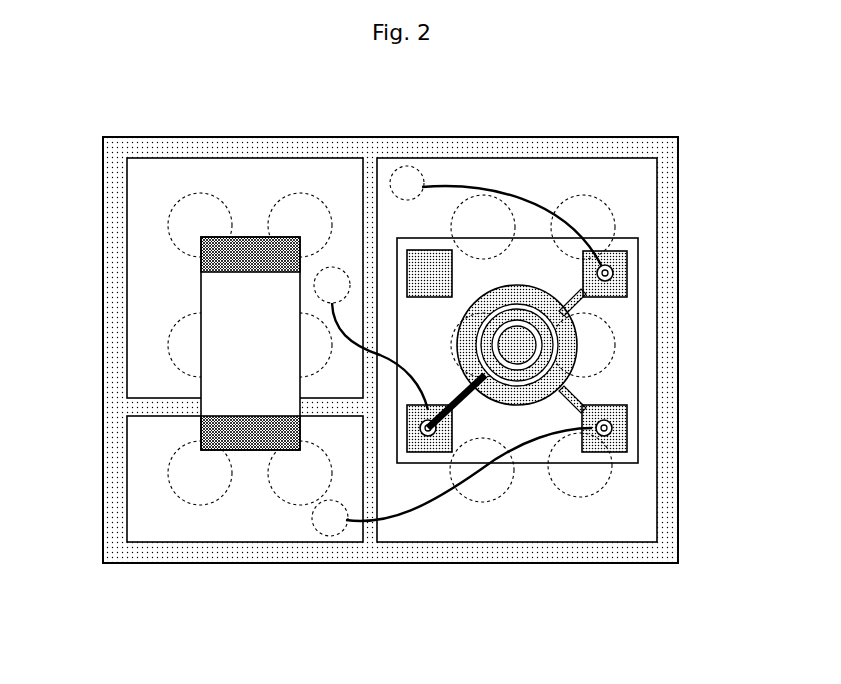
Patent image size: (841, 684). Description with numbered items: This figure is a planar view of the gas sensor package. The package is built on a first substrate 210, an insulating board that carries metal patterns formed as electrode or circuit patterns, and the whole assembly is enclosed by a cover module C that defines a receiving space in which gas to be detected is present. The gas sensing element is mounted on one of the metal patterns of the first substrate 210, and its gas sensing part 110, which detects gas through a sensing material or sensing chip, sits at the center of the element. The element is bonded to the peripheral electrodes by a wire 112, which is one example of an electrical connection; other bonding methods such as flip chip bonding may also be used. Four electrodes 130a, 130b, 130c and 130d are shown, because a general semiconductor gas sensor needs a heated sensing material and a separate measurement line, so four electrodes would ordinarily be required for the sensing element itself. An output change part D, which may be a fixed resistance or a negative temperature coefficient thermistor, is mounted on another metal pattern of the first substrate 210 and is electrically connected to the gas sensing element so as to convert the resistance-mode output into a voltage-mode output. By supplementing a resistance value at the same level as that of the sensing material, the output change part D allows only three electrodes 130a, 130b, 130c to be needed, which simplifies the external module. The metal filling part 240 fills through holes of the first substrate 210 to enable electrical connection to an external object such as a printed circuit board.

The gas sensing part 110 is at (637, 353).
The wire 112 is at (350, 320).
The electrode 130a is at (630, 268).
The electrode 130b is at (630, 423).
The electrode 130c is at (420, 453).
The electrode 130d is at (420, 250).
The first substrate 210 is at (622, 523).
The metal filling part 240 is at (563, 497).
The cover module C is at (668, 180).
The output change part D is at (210, 388).